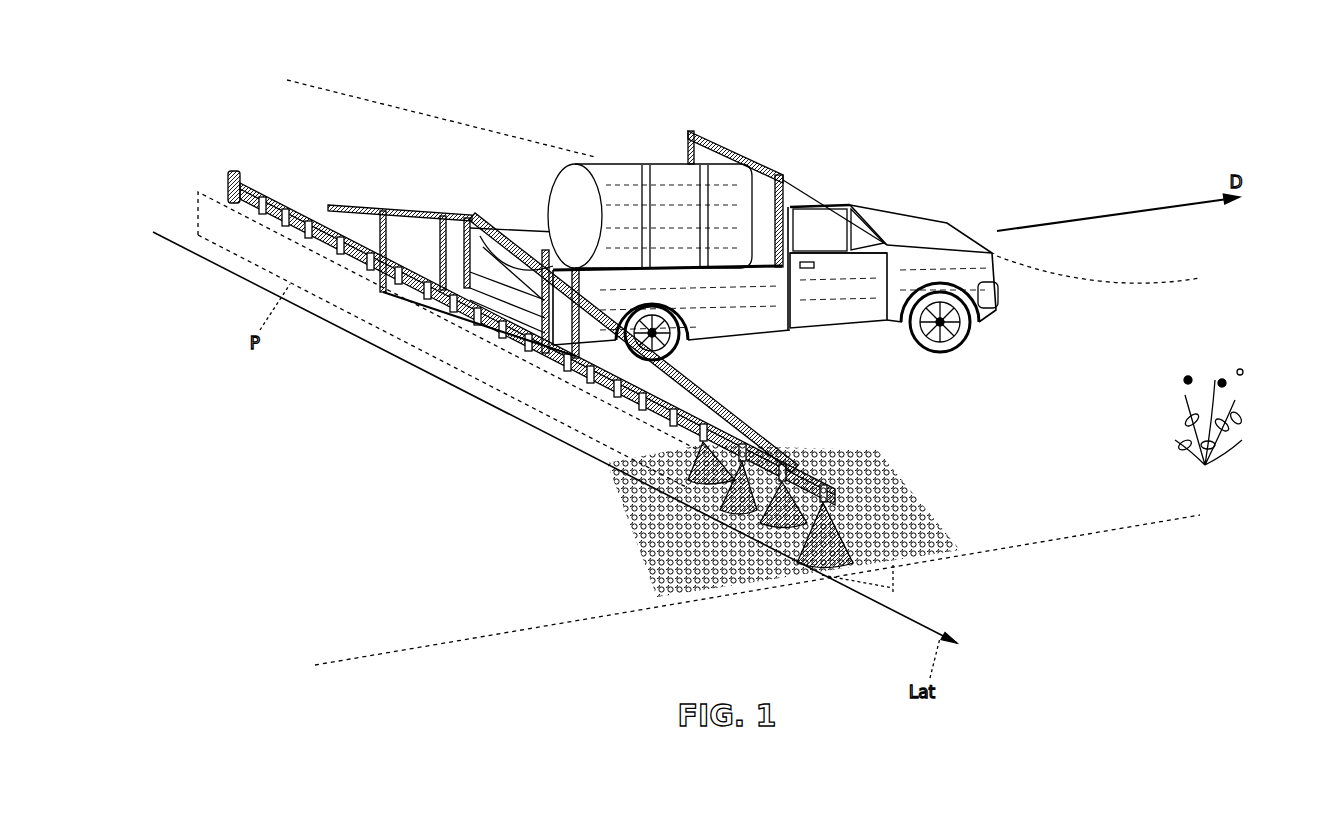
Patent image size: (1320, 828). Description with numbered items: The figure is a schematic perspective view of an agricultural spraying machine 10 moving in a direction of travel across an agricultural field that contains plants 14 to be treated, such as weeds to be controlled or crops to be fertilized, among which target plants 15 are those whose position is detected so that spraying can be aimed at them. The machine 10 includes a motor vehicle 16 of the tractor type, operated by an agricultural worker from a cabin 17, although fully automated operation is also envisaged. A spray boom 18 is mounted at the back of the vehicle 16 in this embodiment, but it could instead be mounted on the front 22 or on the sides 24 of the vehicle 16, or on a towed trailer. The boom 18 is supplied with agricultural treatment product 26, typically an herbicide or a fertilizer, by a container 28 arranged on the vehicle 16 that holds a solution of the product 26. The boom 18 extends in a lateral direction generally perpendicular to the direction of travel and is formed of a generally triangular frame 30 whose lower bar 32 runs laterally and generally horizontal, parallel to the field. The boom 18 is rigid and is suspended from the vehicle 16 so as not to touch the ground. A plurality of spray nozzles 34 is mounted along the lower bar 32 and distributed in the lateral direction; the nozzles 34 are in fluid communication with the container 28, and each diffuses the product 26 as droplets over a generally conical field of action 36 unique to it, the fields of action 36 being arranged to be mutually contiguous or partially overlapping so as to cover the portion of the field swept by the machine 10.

The agricultural spraying machine 10 is at (893, 97).
The plants 14 is at (947, 540).
The target plants 15 is at (1183, 412).
The motor vehicle 16 is at (790, 187).
The cabin 17 is at (813, 223).
The spray boom 18 is at (371, 192).
The front 22 is at (905, 227).
The sides 24 is at (848, 308).
The agricultural treatment product 26 is at (730, 437).
The container 28 is at (604, 166).
The frame 30 is at (337, 205).
The lower bar 32 is at (517, 343).
The spray nozzles 34 is at (677, 410).
The field of action 36 is at (815, 573).